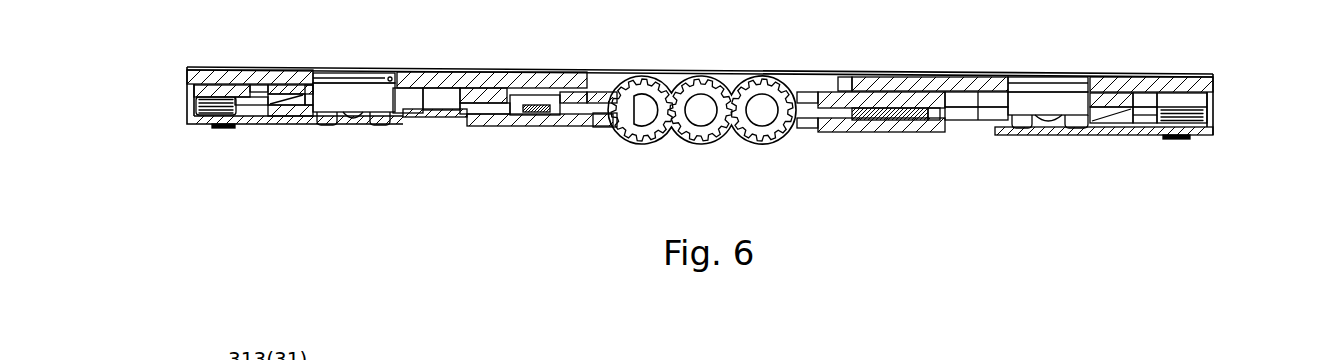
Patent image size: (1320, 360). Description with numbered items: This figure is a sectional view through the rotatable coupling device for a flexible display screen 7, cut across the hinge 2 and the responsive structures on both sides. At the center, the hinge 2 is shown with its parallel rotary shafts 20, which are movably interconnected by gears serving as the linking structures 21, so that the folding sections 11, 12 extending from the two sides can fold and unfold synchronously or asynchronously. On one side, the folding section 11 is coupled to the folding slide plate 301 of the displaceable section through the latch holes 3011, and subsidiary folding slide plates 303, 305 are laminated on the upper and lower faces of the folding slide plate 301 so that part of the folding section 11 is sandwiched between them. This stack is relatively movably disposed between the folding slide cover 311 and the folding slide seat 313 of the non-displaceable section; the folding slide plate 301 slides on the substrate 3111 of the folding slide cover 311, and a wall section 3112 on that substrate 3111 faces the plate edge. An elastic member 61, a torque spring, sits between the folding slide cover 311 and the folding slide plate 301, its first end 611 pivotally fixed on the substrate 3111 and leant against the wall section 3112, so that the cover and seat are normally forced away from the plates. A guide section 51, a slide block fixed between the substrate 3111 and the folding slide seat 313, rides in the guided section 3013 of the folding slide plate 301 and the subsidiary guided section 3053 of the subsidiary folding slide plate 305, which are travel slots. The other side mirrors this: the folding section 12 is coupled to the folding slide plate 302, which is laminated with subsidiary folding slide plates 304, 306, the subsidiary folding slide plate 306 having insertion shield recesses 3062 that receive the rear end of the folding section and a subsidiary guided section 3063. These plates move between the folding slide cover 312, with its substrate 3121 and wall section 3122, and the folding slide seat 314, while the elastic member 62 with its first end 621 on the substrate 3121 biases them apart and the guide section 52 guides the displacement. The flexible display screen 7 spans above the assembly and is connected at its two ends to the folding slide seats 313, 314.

The hinge 2 is at (710, 152).
The rotary shafts 20 is at (637, 100).
The linking structures 21 is at (730, 87).
The folding section 11 is at (518, 113).
The folding section 12 is at (905, 102).
The folding slide plate 301 is at (501, 122).
The latch holes 3011 is at (565, 115).
The guided section 3013 is at (410, 98).
The folding slide plate 302 is at (892, 132).
The subsidiary folding slide plate 303 is at (558, 83).
The subsidiary folding slide plate 304 is at (840, 87).
The subsidiary folding slide plate 305 is at (540, 149).
The subsidiary guided section 3053 is at (413, 110).
The subsidiary folding slide plate 306 is at (934, 122).
The insertion shield recesses 3062 is at (833, 130).
The subsidiary guided section 3063 is at (987, 120).
The folding slide cover 311 is at (183, 95).
The substrate 3111 is at (295, 123).
The wall section 3112 is at (188, 111).
The folding slide cover 312 is at (1250, 96).
The substrate 3121 is at (1112, 134).
The wall section 3122 is at (1215, 123).
The folding slide seat 313 is at (277, 73).
The folding slide seat 314 is at (1170, 87).
The guide section 51 is at (362, 92).
The guide section 52 is at (1052, 100).
The elastic member 61 is at (227, 84).
The first end 611 is at (218, 128).
The elastic member 62 is at (1167, 124).
The first end 621 is at (1183, 137).
The flexible display screen 7 is at (1202, 77).